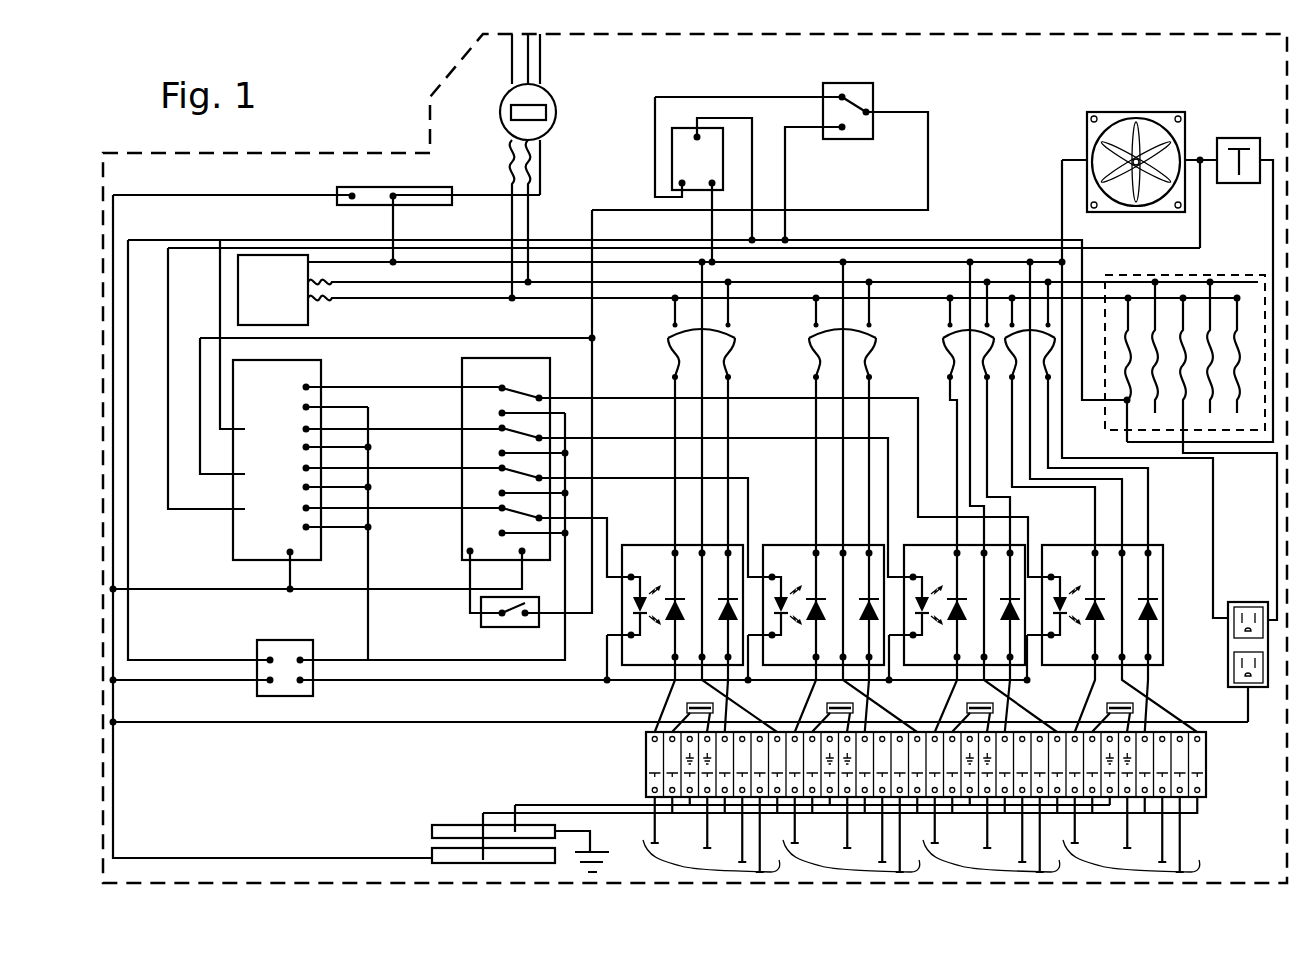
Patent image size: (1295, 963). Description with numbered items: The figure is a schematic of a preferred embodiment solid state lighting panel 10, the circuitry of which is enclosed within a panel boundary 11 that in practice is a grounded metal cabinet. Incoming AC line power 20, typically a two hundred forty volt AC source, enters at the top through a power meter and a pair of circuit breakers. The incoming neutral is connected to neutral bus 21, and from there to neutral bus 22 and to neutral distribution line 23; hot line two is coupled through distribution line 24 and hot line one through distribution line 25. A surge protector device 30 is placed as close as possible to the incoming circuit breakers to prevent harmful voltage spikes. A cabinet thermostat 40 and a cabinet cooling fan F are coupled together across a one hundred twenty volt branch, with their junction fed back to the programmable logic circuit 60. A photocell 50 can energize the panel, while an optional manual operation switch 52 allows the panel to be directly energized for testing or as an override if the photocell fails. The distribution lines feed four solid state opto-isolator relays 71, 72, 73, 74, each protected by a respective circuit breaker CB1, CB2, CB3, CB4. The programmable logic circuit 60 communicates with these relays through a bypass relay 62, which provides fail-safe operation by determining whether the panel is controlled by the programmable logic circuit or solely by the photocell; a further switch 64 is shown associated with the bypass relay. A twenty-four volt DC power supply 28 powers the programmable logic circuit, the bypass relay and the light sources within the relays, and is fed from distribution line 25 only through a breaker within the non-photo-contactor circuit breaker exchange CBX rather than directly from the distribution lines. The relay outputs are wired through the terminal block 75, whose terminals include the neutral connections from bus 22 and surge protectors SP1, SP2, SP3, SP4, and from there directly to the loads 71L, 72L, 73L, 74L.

The solid state lighting panel 10 is at (429, 66).
The control panel enclosure 11 is at (717, 69).
The incoming AC line power 20 is at (500, 109).
The neutral bus 21 is at (366, 190).
The neutral bus 22 is at (444, 821).
The neutral distribution line 23 is at (538, 262).
The distribution line 24 is at (552, 282).
The distribution line 25 is at (572, 298).
The 24 VDC power supply 28 is at (272, 622).
The surge protector device 30 is at (277, 301).
The cabinet thermostat 40 is at (1225, 115).
The photocell 50 is at (706, 172).
The manual operation switch 52 is at (860, 133).
The programmable logic circuit (PLC) 60 is at (276, 491).
The PLC bypass relay 62 is at (466, 374).
The switch 64 is at (493, 625).
The solid state relay 71 is at (647, 543).
The solid state relay 72 is at (788, 543).
The solid state relay 73 is at (929, 543).
The solid state relay 74 is at (1067, 543).
The terminal block 75 is at (641, 766).
The load 71L is at (707, 842).
The load 72L is at (848, 842).
The load 73L is at (989, 842).
The load 74L is at (1129, 842).
The circuit breaker CB1 is at (667, 338).
The circuit breaker CB2 is at (809, 338).
The circuit breaker CB3 is at (944, 338).
The circuit breaker CB4 is at (1012, 320).
The circuit breaker exchange CBX is at (1247, 280).
The cabinet cooling fan F is at (1087, 130).
The surge protector SP1 is at (687, 706).
The surge protector SP2 is at (827, 706).
The surge protector SP3 is at (967, 706).
The surge protector SP4 is at (1107, 706).